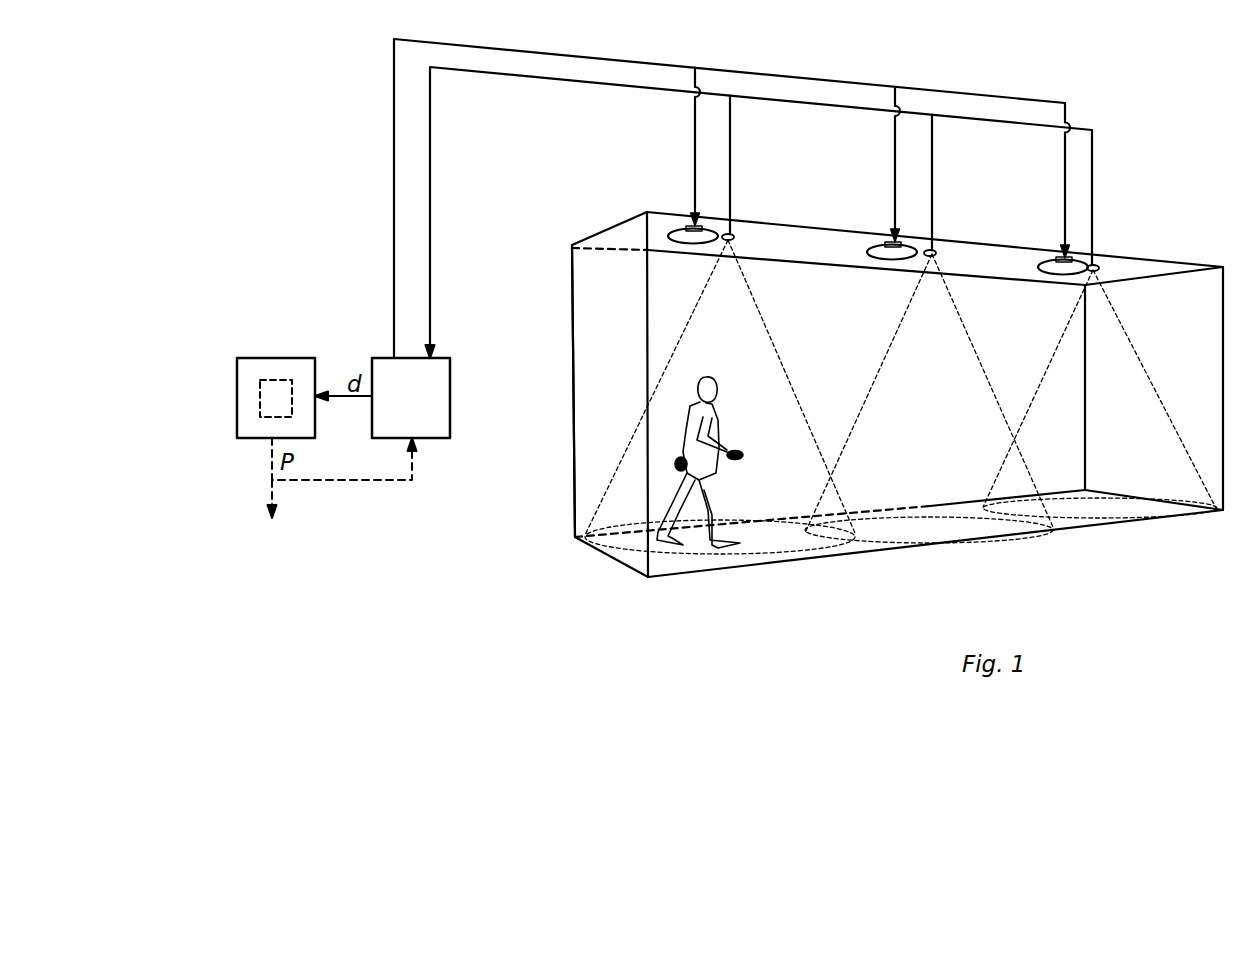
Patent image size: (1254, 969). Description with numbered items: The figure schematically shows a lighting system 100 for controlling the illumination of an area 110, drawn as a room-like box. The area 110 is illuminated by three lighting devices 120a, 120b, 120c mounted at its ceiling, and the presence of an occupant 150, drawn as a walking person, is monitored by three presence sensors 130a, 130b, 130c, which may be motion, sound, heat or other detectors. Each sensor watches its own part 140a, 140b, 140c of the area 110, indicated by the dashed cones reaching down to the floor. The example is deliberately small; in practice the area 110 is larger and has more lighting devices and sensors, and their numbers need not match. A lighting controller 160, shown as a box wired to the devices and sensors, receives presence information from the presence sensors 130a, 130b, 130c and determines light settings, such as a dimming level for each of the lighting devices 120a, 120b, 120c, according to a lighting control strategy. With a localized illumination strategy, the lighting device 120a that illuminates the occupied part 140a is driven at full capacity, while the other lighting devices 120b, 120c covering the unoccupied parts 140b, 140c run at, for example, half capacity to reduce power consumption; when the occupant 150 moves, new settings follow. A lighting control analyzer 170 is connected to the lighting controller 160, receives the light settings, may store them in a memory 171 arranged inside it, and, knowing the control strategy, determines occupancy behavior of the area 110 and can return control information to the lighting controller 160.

The lighting system 100 is at (196, 146).
The area 110 is at (590, 311).
The lighting device 120a is at (688, 226).
The lighting device 120b is at (887, 243).
The lighting device 120c is at (1060, 258).
The presence sensor 130a is at (736, 235).
The presence sensor 130b is at (938, 252).
The presence sensor 130c is at (1099, 267).
The part of the area 140a is at (786, 372).
The part of the area 140b is at (983, 367).
The part of the area 140c is at (1142, 357).
The occupant 150 is at (718, 430).
The lighting controller 160 is at (430, 413).
The lighting control analyzer 170 is at (255, 358).
The memory 171 is at (278, 380).